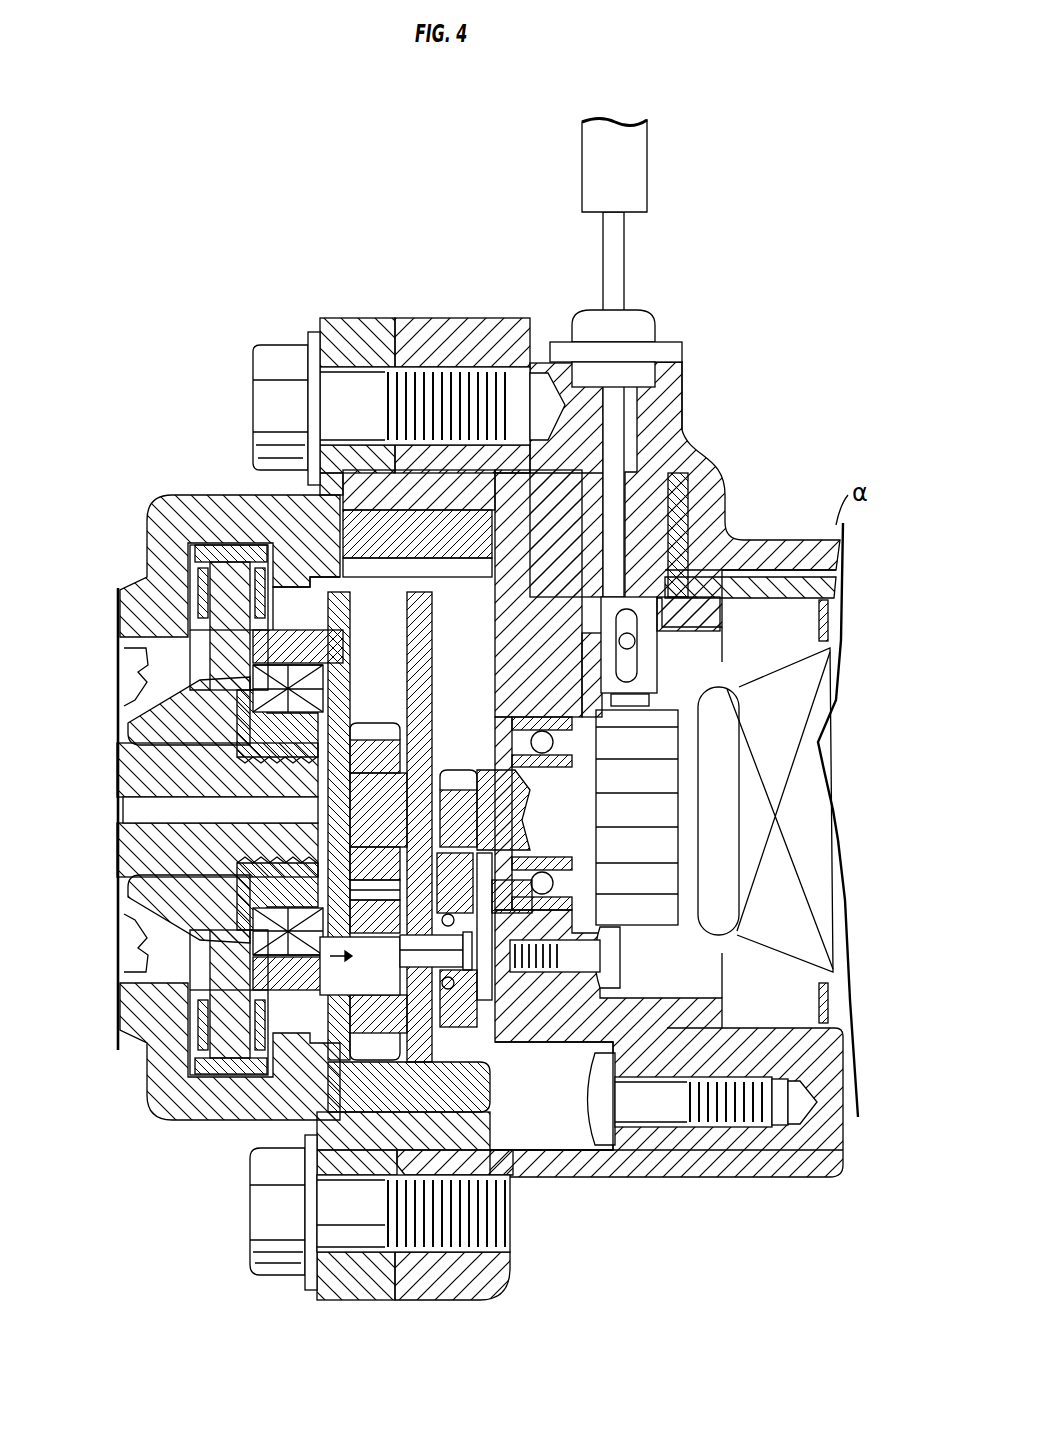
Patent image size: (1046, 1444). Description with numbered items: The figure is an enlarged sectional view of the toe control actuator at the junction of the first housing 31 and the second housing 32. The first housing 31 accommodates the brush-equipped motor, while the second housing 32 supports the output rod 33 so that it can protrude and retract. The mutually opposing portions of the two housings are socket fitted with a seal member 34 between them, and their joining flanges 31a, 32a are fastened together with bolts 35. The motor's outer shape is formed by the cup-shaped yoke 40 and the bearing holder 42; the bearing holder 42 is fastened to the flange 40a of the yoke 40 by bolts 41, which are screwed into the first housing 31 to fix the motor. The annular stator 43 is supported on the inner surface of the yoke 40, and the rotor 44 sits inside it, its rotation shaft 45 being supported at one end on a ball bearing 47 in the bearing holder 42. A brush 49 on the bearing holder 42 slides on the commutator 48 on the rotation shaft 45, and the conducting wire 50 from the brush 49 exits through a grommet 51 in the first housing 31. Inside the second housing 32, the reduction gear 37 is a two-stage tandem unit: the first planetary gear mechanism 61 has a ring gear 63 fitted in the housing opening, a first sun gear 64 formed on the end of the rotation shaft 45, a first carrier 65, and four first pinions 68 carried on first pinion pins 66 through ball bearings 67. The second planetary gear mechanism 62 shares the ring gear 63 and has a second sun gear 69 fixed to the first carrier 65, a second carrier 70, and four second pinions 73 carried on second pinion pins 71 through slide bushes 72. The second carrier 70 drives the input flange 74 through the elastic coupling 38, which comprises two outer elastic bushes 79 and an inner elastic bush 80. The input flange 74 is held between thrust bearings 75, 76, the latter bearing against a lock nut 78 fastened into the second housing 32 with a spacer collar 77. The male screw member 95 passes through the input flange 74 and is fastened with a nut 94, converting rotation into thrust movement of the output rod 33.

The first housing 31 is at (795, 530).
The joining flange 31a is at (446, 325).
The second housing 32 is at (142, 533).
The joining flange 32a is at (372, 330).
The output rod 33 is at (117, 956).
The seal member 34 is at (452, 368).
The bolt 35 is at (287, 348).
The planetary gear type reduction gear 37 is at (498, 1103).
The elastic coupling 38 is at (232, 542).
The yoke 40 is at (766, 567).
The flange 40a is at (686, 450).
The bolt 41 is at (640, 1130).
The bearing holder 42 is at (555, 1045).
The stator 43 is at (819, 625).
The rotor 44 is at (820, 705).
The rotation shaft 45 is at (543, 800).
The ball bearing 47 is at (514, 738).
The commutator 48 is at (642, 900).
The brush 49 is at (645, 700).
The conducting wire 50 is at (622, 277).
The grommet 51 is at (650, 313).
The first planetary gear mechanism 61 is at (503, 1043).
The second planetary gear mechanism 62 is at (378, 1075).
The ring gear 63 is at (440, 572).
The first sun gear 64 is at (462, 782).
The first carrier 65 is at (432, 680).
The first pinion pin 66 is at (545, 972).
The ball bearing 67 is at (483, 998).
The first pinion 68 is at (488, 862).
The second sun gear 69 is at (376, 727).
The second carrier 70 is at (330, 640).
The second pinion pin 71 is at (210, 1056).
The slide bush 72 is at (383, 862).
The second pinion 73 is at (318, 1120).
The input flange 74 is at (119, 1018).
The thrust bearing 75 is at (240, 600).
The thrust bearing 76 is at (305, 588).
The spacer collar 77 is at (200, 1074).
The lock nut 78 is at (215, 1082).
The outer elastic bush 79 is at (275, 675).
The inner elastic bush 80 is at (300, 695).
The nut 94 is at (117, 899).
The male screw member 95 is at (128, 844).